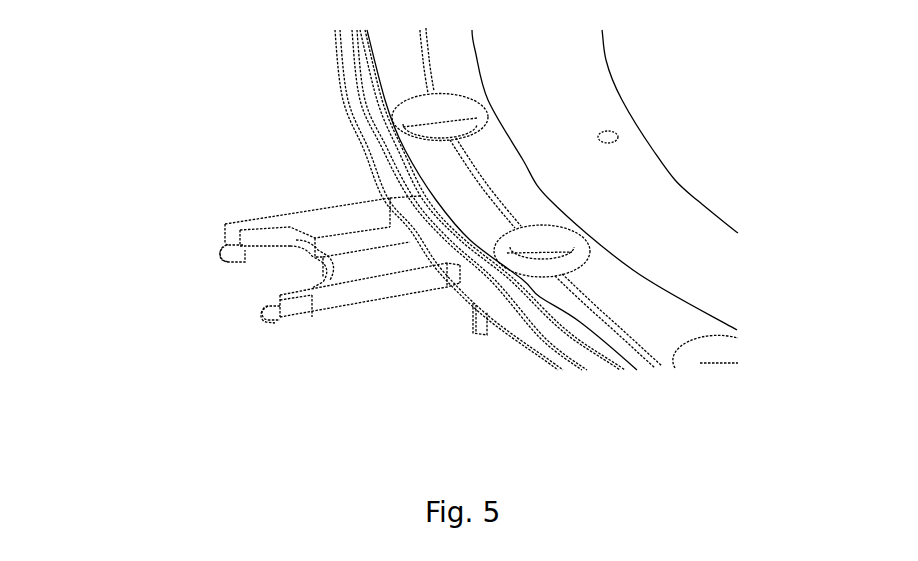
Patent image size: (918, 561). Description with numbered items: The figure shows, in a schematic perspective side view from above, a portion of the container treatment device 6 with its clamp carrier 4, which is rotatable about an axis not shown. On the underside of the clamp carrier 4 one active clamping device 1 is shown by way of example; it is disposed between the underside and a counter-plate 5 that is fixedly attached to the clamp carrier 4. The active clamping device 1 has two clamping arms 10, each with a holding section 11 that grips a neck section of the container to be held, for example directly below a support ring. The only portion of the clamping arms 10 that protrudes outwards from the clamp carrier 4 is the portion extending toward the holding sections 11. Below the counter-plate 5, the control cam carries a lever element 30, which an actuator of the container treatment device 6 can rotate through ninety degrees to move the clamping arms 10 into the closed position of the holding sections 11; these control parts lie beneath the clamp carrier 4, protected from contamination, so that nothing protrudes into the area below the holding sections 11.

The active clamping device 1 is at (142, 243).
The clamp carrier 4 is at (575, 107).
The counter-plate 5 is at (435, 300).
The container treatment device 6 is at (176, 80).
The clamping arm 10 is at (323, 223).
The holding section 11 is at (277, 305).
The lever element 30 is at (487, 325).